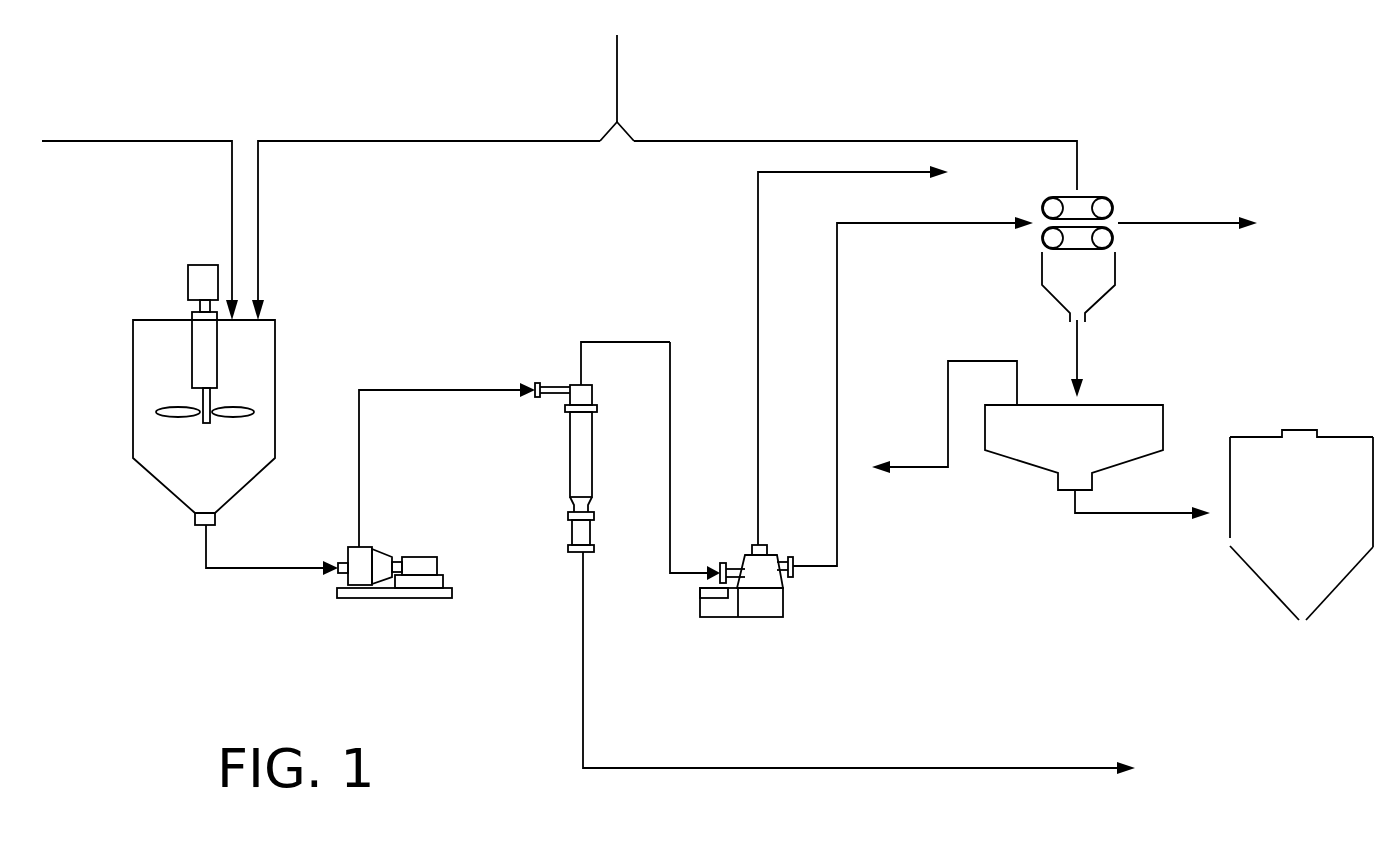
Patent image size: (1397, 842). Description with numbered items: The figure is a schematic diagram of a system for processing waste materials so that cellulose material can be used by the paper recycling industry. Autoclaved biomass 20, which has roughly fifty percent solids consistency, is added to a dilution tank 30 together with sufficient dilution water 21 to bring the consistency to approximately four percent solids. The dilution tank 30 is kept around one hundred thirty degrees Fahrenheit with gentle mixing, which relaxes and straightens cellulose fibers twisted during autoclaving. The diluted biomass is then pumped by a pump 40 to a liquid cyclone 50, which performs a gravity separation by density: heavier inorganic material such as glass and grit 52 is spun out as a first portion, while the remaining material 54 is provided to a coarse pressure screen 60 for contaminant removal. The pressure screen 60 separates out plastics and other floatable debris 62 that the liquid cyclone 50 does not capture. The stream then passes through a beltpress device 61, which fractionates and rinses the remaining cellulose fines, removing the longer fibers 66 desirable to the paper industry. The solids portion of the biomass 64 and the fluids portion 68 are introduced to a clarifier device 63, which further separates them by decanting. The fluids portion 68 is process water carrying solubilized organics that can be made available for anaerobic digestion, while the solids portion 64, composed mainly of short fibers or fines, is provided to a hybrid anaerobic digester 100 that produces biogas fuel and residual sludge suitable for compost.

The autoclaved biomass 20 is at (166, 125).
The dilution water 21 is at (366, 125).
The dilution tank 30 is at (152, 478).
The pump 40 is at (417, 598).
The liquid cyclone 50 is at (568, 452).
The glass and grit 52 is at (603, 686).
The remaining material 54 is at (648, 491).
The coarse pressure screen 60 is at (752, 553).
The beltpress device 61 is at (1093, 195).
The plastics and other floatable debris 62 is at (780, 306).
The clarifier device 63 is at (1091, 452).
The solids portion of the biomass 64 is at (1142, 501).
The longer fibers 66 is at (1187, 210).
The fluids portion 68 is at (944, 417).
The hybrid anaerobic digester 100 is at (1323, 525).